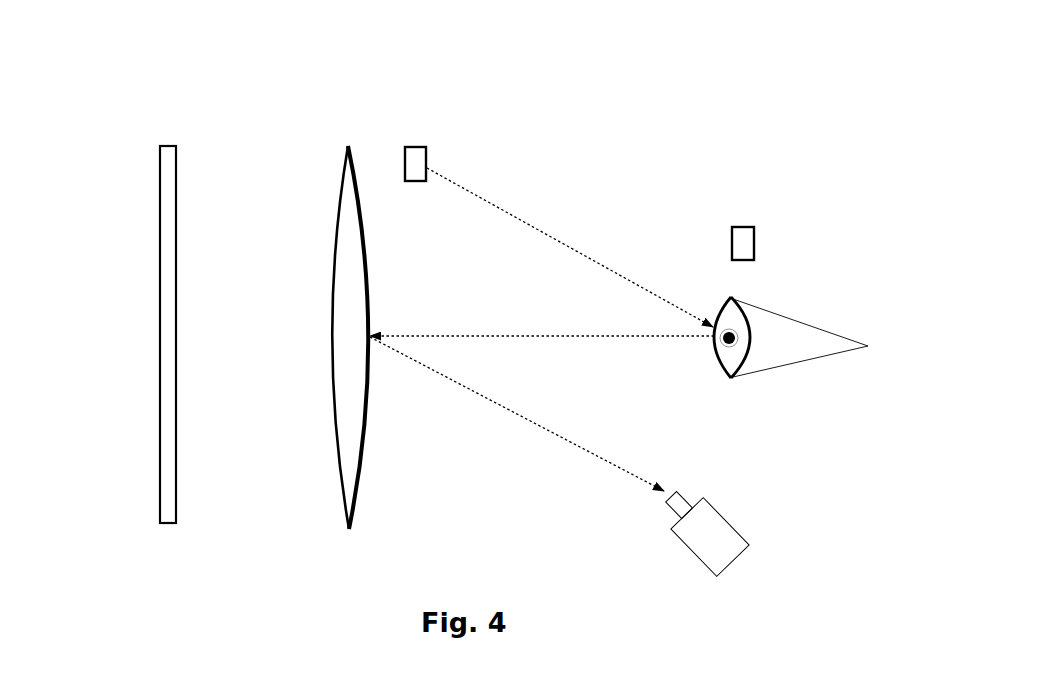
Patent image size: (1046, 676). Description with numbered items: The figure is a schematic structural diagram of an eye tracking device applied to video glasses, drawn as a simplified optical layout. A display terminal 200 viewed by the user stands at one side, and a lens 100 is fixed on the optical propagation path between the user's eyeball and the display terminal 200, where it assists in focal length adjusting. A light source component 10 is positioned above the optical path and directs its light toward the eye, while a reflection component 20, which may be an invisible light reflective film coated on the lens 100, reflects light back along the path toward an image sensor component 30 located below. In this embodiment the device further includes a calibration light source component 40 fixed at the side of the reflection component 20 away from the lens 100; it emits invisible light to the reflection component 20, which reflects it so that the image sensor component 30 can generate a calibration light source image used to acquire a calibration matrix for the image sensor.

The display terminal 200 is at (160, 330).
The lens 100 is at (332, 330).
The light source component 10 is at (417, 147).
The reflection component 20 is at (368, 285).
The image sensor component 30 is at (738, 531).
The calibration light source component 40 is at (742, 227).